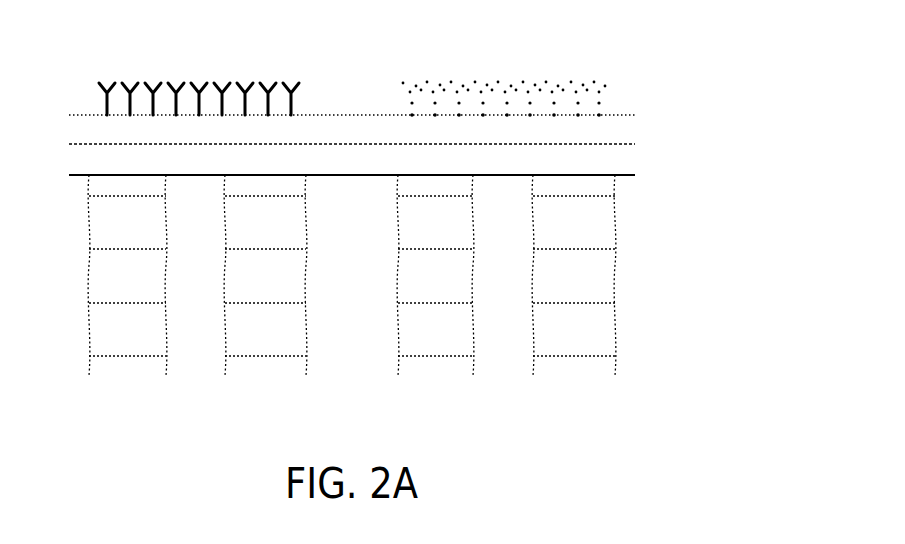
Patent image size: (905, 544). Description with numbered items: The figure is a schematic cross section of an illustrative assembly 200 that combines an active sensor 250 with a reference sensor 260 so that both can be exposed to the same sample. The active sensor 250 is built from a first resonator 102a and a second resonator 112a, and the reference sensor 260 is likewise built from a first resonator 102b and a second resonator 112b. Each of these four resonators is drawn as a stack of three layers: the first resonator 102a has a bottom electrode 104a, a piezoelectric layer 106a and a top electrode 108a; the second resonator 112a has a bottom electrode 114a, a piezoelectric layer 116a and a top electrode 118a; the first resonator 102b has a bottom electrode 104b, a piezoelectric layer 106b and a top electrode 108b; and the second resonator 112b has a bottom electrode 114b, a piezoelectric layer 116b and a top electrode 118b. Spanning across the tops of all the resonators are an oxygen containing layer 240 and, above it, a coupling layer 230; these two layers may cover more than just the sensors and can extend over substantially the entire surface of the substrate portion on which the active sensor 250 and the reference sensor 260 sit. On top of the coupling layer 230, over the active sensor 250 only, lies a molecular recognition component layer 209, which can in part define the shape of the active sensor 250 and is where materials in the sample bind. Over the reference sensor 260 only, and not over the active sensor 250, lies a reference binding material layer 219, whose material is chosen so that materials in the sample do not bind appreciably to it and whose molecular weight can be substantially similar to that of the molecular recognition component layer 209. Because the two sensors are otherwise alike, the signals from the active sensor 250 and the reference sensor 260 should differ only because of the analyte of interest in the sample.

The assembly 200 is at (680, 158).
The molecular recognition component layer 209 is at (84, 82).
The reference binding material layer 219 is at (620, 82).
The coupling layer 230 is at (256, 137).
The oxygen containing layer 240 is at (347, 167).
The active sensor 250 is at (323, 374).
The reference sensor 260 is at (630, 374).
The first resonator 102a is at (82, 290).
The first resonator 102b is at (393, 340).
The second resonator 112a is at (313, 270).
The second resonator 112b is at (618, 325).
The bottom electrode 104a is at (150, 338).
The piezoelectric layer 106a is at (150, 284).
The top electrode 108a is at (150, 231).
The bottom electrode 114a is at (289, 338).
The piezoelectric layer 116a is at (289, 284).
The top electrode 118a is at (289, 231).
The bottom electrode 104b is at (459, 338).
The piezoelectric layer 106b is at (459, 284).
The top electrode 108b is at (459, 231).
The bottom electrode 114b is at (598, 338).
The piezoelectric layer 116b is at (598, 284).
The top electrode 118b is at (598, 231).